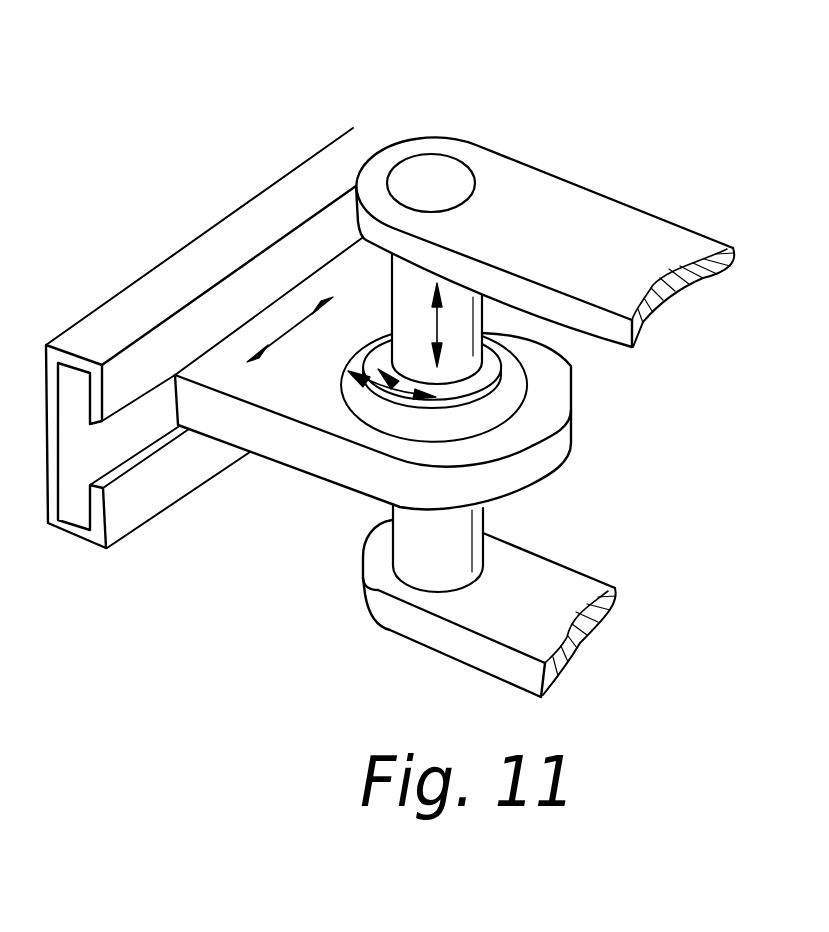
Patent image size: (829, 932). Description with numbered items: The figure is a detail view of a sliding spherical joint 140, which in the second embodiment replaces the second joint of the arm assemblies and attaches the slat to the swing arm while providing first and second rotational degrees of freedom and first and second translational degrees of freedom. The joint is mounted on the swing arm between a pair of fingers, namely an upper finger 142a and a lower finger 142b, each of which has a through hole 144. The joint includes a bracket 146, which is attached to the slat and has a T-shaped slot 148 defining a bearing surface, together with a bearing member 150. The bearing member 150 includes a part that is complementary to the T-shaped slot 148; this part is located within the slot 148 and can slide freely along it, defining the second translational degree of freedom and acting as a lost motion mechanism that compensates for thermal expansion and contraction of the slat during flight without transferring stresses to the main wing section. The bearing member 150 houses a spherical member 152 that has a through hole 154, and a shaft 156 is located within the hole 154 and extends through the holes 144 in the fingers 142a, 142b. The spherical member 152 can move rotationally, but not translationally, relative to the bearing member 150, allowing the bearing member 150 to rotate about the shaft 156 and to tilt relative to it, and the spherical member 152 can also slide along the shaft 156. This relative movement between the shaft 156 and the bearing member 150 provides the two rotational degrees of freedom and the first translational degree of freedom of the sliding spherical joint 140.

The sliding spherical joint 140 is at (576, 101).
The upper finger 142a is at (663, 237).
The lower finger 142b is at (572, 587).
The through hole 144 is at (478, 181).
The bracket 146 is at (230, 216).
The T-shaped slot 148 is at (73, 478).
The bearing member 150 is at (277, 455).
The spherical member 152 is at (497, 393).
The through hole 154 is at (485, 333).
The shaft 156 is at (458, 537).